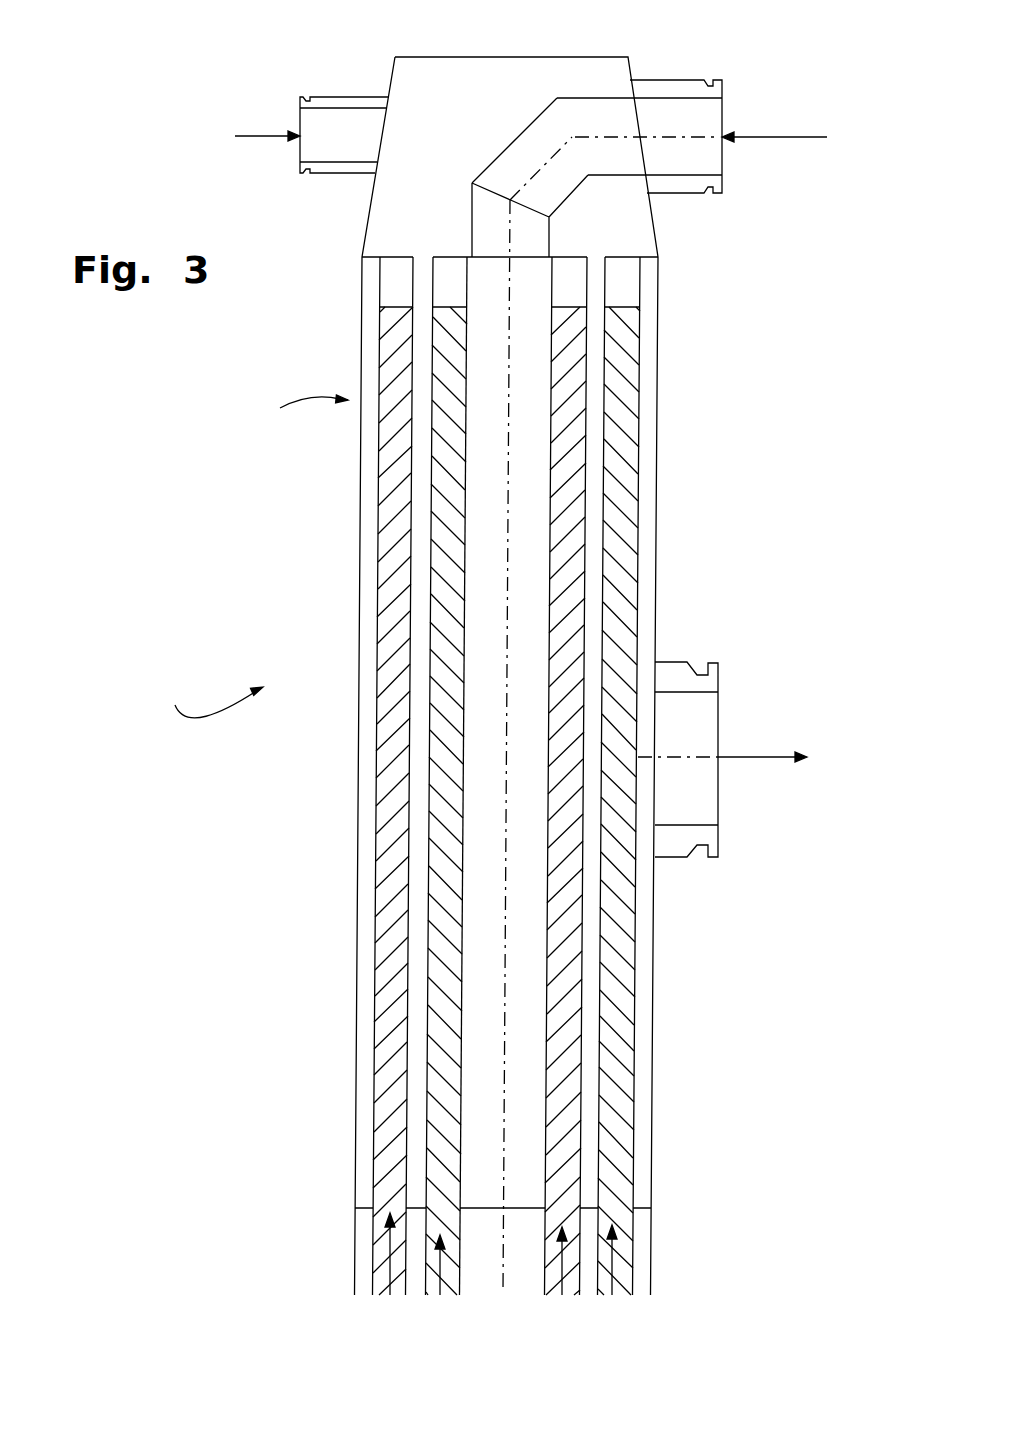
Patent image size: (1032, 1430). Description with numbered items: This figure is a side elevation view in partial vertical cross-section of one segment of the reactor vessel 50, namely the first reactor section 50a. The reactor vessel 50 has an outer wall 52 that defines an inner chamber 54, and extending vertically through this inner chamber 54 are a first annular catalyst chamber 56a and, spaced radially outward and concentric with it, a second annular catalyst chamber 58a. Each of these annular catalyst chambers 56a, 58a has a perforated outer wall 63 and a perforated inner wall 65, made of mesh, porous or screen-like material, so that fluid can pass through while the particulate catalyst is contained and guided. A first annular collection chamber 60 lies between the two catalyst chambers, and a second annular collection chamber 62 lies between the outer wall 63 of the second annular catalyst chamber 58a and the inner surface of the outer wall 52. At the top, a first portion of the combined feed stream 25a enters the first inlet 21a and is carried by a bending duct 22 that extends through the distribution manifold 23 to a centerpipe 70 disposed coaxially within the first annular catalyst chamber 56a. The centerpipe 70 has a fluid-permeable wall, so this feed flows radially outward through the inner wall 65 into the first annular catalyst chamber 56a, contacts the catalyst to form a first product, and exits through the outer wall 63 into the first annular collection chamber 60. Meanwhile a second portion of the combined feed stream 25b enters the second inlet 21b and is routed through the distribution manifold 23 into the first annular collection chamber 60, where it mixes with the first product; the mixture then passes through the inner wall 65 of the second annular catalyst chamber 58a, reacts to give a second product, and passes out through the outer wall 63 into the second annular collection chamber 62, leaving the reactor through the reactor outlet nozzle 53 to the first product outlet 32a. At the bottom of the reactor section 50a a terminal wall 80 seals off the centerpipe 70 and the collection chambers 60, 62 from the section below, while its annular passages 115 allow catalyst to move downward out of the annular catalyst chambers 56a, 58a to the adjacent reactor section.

The first inlet 21a is at (722, 118).
The second inlet 21b is at (298, 119).
The duct 22 is at (552, 117).
The distribution manifold 23 is at (393, 190).
The first portion of the combined feed stream 25a is at (797, 137).
The second portion of the combined feed stream 25b is at (255, 136).
The first product outlet 32a is at (747, 755).
The reactor vessel 50 is at (209, 698).
The first reactor section 50a is at (300, 417).
The outer wall 52 is at (360, 489).
The reactor outlet nozzle 53 is at (678, 857).
The inner chamber 54 is at (488, 373).
The first annular catalyst chamber 56a is at (575, 375).
The second annular catalyst chamber 58a is at (627, 418).
The first annular collection chamber 60 is at (423, 627).
The second annular collection chamber 62 is at (370, 692).
The outer wall 63 is at (377, 737).
The inner wall 65 is at (410, 1198).
The centerpipe 70 is at (527, 473).
The terminal wall 80 is at (512, 1215).
The annular passages 115 is at (398, 1278).